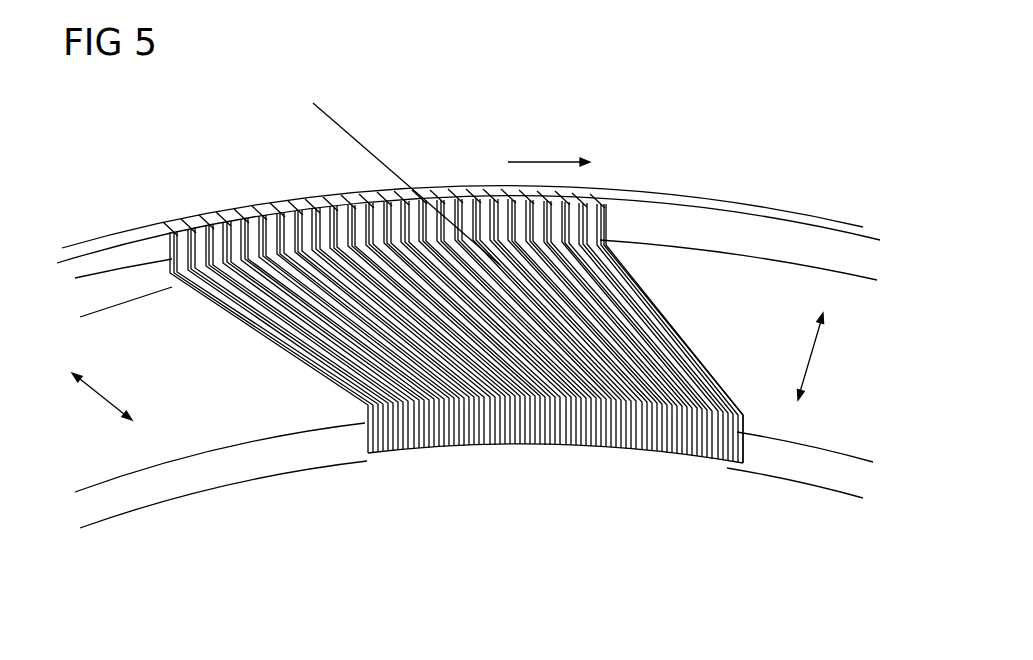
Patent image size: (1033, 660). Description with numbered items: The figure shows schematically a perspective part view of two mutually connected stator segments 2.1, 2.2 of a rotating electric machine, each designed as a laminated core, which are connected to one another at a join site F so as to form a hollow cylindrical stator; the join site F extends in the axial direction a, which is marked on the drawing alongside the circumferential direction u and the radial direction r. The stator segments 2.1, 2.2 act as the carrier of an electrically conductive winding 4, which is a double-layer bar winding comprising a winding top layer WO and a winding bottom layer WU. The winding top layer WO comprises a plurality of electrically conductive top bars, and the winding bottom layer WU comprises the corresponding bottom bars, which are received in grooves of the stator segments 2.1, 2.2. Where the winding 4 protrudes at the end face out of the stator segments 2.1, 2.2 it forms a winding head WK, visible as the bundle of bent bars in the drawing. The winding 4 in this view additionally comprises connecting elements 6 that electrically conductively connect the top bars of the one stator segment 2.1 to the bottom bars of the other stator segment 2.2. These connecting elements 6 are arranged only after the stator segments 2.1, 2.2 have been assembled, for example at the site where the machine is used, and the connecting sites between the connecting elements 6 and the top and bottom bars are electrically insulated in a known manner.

The stator segment 2.1 is at (218, 172).
The stator segment 2.2 is at (712, 172).
The winding 4 is at (672, 342).
The connecting element 6 is at (496, 250).
The join site F is at (348, 130).
The circumferential direction u is at (549, 146).
The radial direction r is at (812, 356).
The axial direction a is at (102, 400).
The winding bottom layer WU is at (593, 220).
The winding top layer WO is at (680, 443).
The winding head WK is at (645, 288).